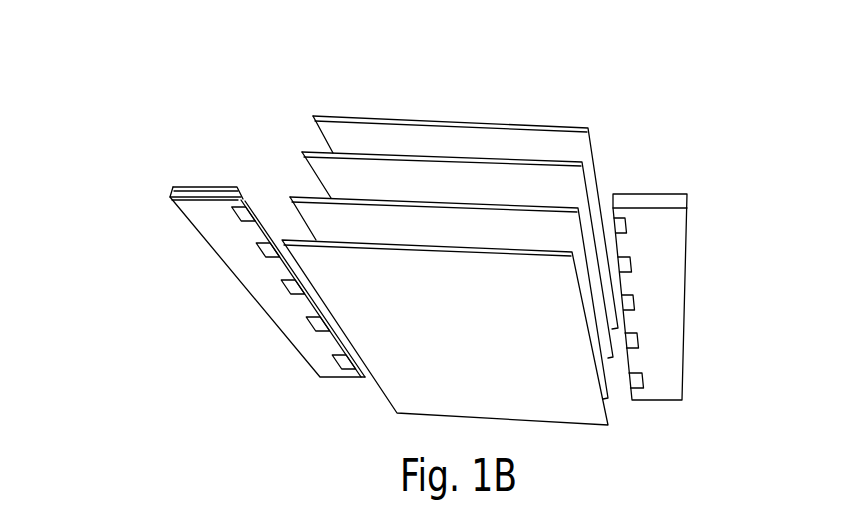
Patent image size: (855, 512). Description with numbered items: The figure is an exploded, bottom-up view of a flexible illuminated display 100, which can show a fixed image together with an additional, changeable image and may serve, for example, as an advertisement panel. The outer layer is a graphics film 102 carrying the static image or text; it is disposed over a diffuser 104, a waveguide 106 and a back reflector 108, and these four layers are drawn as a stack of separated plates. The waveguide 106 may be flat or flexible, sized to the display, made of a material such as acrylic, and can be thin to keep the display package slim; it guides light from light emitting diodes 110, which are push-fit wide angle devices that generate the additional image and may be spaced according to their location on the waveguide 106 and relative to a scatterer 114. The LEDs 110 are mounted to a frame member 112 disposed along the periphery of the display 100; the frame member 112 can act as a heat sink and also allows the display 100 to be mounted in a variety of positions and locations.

The display 100 is at (353, 74).
The graphics film 102 is at (542, 125).
The diffuser 104 is at (311, 151).
The waveguide 106 is at (300, 196).
The back reflector 108 is at (591, 418).
The light emitting diodes (LEDs) 110 is at (348, 368).
The frame member 112 is at (668, 184).
The scatterer 114 is at (445, 246).